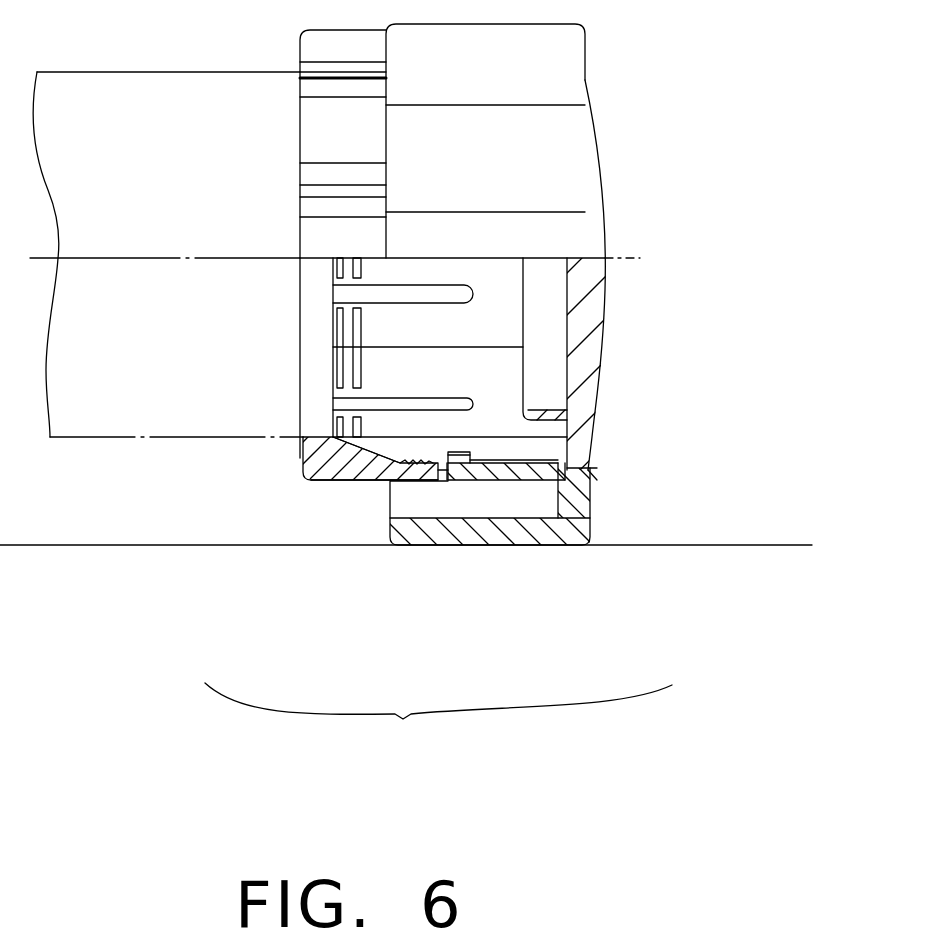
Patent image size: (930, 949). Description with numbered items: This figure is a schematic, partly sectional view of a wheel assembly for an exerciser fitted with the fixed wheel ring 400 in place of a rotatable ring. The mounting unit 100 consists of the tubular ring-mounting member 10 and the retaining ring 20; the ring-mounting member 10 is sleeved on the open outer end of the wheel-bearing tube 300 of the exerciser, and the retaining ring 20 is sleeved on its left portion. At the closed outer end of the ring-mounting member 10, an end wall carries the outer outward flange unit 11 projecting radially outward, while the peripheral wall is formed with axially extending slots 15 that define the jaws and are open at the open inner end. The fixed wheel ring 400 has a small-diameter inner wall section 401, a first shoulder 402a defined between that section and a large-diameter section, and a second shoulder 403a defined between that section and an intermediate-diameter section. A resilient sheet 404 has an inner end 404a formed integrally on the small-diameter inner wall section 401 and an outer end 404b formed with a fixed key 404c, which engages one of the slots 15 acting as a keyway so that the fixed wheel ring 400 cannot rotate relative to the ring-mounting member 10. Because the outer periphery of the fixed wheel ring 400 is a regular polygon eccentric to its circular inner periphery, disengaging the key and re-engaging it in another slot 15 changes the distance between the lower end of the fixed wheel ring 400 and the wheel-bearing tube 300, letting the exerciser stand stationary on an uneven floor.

The tubular ring-mounting member 10 is at (601, 459).
The outer outward flange unit 11 is at (588, 476).
The axially extending slots 15 is at (333, 478).
The retaining ring 20 is at (325, 492).
The mounting unit 100 is at (438, 722).
The wheel-bearing tube 300 is at (120, 452).
The fixed wheel ring 400 is at (503, 556).
The small-diameter inner wall section 401 is at (507, 467).
The first shoulder 402a is at (400, 463).
The second shoulder 403a is at (580, 478).
The resilient sheet 404 is at (463, 470).
The inner end 404a is at (560, 472).
The outer end 404b is at (447, 468).
The fixed key 404c is at (462, 452).